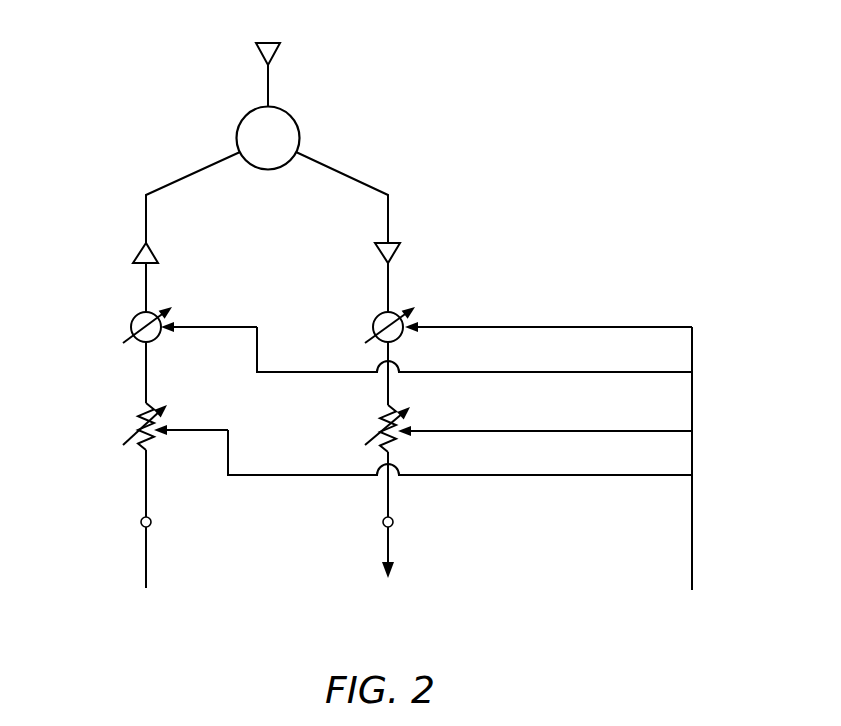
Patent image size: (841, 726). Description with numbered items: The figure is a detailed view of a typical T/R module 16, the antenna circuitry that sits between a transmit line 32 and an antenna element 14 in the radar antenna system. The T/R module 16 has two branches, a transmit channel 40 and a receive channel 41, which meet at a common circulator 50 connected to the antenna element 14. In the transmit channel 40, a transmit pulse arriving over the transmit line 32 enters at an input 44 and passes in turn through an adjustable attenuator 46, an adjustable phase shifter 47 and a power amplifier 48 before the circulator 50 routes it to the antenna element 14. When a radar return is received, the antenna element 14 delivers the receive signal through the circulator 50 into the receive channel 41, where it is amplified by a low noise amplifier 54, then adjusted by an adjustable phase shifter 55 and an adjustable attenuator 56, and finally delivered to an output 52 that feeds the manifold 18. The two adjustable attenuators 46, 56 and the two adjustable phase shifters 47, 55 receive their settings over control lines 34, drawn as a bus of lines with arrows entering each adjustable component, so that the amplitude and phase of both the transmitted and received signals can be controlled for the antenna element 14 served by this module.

The antenna element 14 is at (277, 57).
The circulator 50 is at (237, 130).
The T/R module 16 is at (496, 119).
The power amplifier 48 is at (135, 253).
The adjustable phase shifter 47 is at (131, 317).
The transmit channel 40 is at (104, 387).
The adjustable attenuator 46 is at (136, 422).
The input 44 is at (140, 522).
The transmit line 32 is at (145, 563).
The low noise amplifier 54 is at (375, 253).
The receive channel 41 is at (438, 265).
The adjustable phase shifter 55 is at (373, 317).
The adjustable attenuator 56 is at (380, 420).
The output 52 is at (393, 524).
The manifold 18 is at (388, 594).
The control line 34 is at (692, 545).